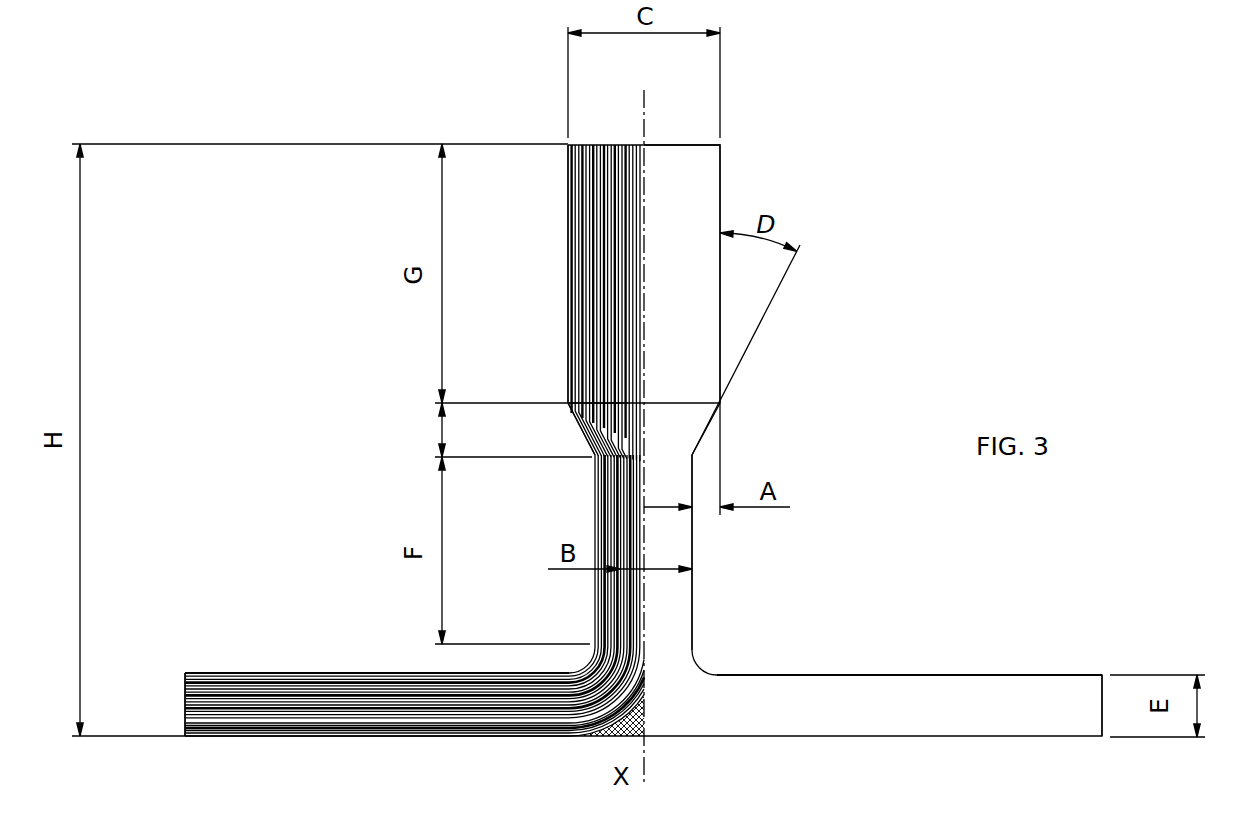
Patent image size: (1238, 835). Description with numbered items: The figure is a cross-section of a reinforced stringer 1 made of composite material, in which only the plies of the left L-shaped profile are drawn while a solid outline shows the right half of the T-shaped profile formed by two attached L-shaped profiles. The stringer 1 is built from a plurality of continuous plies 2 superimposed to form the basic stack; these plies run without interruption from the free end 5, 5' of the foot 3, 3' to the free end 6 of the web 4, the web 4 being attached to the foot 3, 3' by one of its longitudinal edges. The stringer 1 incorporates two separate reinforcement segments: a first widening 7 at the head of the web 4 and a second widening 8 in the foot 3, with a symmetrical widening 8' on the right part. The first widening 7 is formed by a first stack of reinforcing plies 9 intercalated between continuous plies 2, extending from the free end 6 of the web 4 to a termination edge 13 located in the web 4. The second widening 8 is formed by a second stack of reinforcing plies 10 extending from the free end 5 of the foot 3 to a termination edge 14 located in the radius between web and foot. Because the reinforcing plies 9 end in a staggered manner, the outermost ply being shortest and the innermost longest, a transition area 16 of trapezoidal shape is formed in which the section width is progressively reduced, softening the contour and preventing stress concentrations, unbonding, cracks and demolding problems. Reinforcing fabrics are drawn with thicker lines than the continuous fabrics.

The reinforced stringer 1 is at (730, 572).
The continuous plies 2 is at (633, 237).
The foot 3 is at (377, 643).
The foot 3' is at (909, 618).
The web 4 is at (692, 615).
The free end of the foot 5 is at (156, 733).
The free end of the foot 5' is at (1138, 667).
The free end of the web 6 is at (681, 145).
The first widening 7 is at (568, 270).
The second widening 8 is at (377, 611).
The widening 8' is at (909, 618).
The reinforcing plies 9 is at (626, 145).
The reinforcing plies 10 is at (185, 712).
The termination edge 13 is at (626, 438).
The termination edge 14 is at (641, 724).
The transition area 16 is at (440, 430).